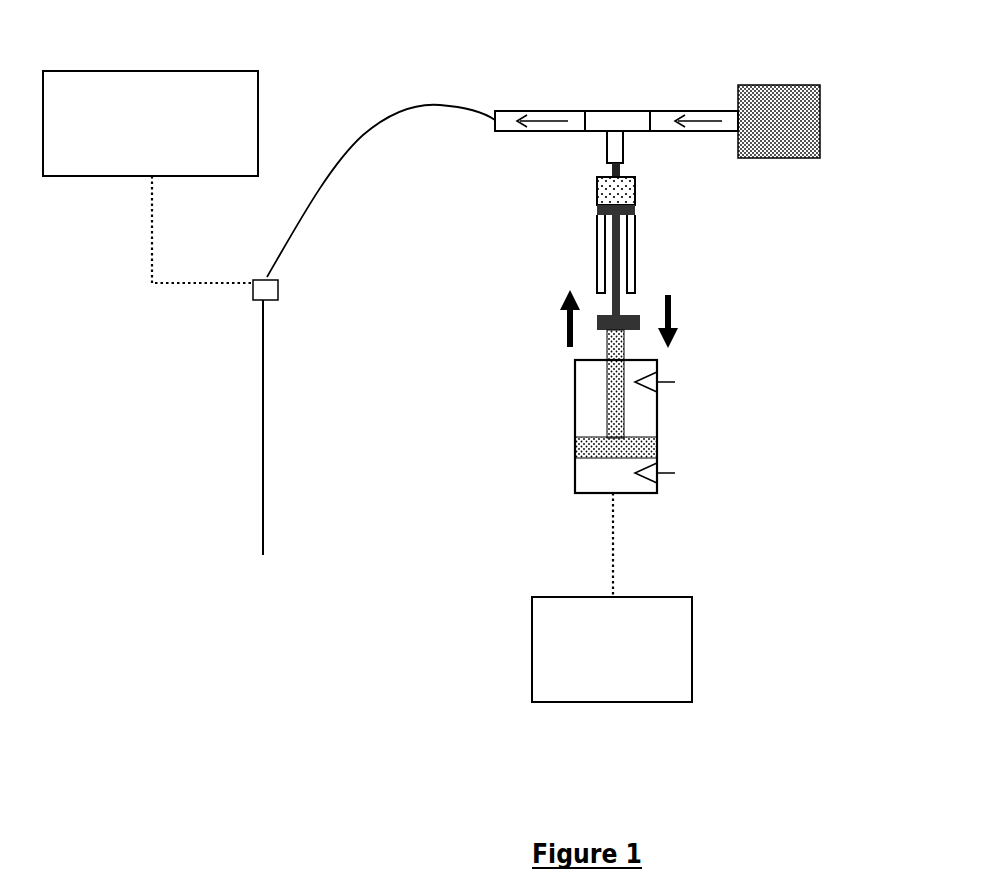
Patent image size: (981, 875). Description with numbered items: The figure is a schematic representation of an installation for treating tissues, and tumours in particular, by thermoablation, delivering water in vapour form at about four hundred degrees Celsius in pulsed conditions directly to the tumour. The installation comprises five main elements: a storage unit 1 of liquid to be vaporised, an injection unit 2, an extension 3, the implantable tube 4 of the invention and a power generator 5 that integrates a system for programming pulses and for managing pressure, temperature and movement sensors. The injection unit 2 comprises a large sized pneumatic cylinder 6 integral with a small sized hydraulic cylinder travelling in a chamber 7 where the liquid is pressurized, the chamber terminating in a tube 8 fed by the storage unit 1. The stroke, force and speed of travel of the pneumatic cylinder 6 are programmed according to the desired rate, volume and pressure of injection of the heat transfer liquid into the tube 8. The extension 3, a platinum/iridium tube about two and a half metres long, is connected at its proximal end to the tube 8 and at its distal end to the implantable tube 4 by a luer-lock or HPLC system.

The storage unit 1 is at (832, 73).
The injection unit 2 is at (715, 328).
The extension 3 is at (397, 110).
The implantable tube 4 is at (263, 383).
The power generator 5 is at (132, 70).
The pneumatic cylinder 6 is at (657, 453).
The chamber 7 is at (634, 186).
The tube 8 is at (610, 110).